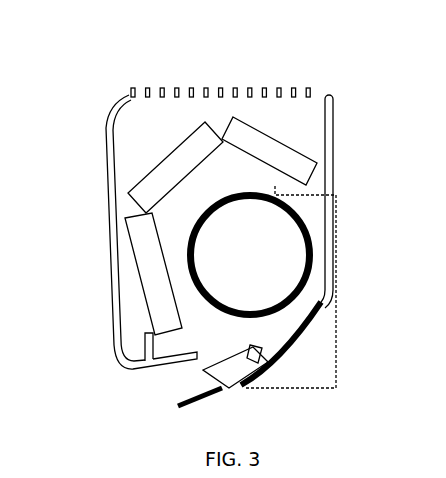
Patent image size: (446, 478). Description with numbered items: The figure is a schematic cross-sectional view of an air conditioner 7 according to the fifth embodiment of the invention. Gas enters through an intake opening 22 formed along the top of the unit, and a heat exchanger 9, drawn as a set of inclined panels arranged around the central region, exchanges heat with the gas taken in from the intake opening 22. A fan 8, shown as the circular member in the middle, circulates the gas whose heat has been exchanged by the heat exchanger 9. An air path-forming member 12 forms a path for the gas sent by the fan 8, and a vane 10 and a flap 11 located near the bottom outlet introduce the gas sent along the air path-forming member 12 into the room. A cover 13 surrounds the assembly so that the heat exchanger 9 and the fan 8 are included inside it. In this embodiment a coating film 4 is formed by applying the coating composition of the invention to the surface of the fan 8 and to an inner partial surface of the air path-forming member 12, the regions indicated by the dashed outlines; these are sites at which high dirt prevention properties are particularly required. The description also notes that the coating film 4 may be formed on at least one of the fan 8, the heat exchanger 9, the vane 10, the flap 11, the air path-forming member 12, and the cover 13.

The air conditioner 7 is at (218, 218).
The intake opening 22 is at (218, 74).
The heat exchanger 9 is at (280, 147).
The cover 13 is at (108, 229).
The air path-forming member 12 is at (338, 284).
The fan 8 is at (285, 247).
The coating film 4 is at (337, 195).
The vane 10 is at (253, 360).
The flap 11 is at (209, 395).